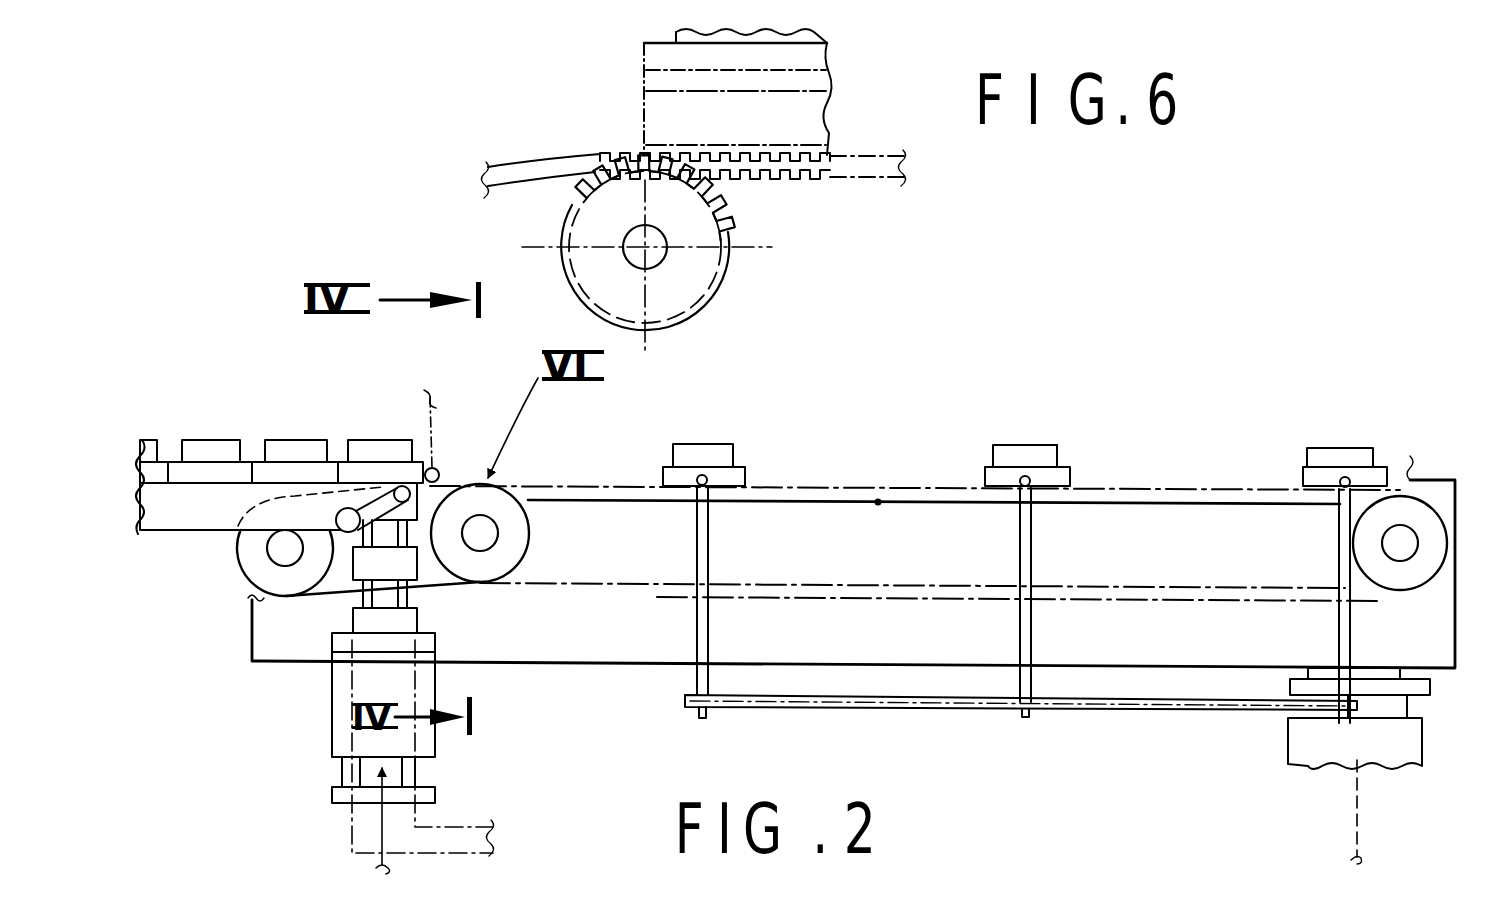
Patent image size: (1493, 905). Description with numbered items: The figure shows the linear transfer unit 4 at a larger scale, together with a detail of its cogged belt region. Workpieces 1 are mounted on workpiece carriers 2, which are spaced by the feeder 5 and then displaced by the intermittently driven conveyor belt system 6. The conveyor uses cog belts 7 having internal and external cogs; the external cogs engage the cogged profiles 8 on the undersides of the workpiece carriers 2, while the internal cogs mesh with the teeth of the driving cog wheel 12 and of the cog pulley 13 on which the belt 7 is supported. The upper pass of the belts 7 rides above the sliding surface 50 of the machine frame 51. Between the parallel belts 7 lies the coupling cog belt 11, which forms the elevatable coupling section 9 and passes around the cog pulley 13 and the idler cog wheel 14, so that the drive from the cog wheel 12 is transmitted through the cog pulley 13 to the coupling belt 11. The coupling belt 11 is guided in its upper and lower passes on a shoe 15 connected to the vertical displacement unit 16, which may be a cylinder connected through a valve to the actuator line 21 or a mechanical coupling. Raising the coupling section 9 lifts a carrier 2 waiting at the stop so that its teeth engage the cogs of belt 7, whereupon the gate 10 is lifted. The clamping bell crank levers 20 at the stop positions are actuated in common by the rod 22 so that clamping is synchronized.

In FIG. 6, the workpiece 1 is at (826, 35).
In FIG. 2, the workpiece 1 is at (287, 447).
In FIG. 6, the workpiece carrier 2 is at (812, 104).
In FIG. 2, the workpiece carrier 2 is at (198, 472).
In FIG. 2, the linear transfer unit 4 is at (1178, 477).
In FIG. 2, the feeder 5 is at (150, 540).
In FIG. 2, the conveyor belt system 6 is at (630, 590).
In FIG. 6, the cog belt 7 is at (693, 198).
In FIG. 2, the cog belt 7 is at (832, 487).
In FIG. 6, the cogged profile 8 is at (722, 113).
In FIG. 2, the coupling section 9 is at (318, 602).
In FIG. 2, the gate 10 is at (440, 470).
In FIG. 6, the coupling cog belt 11 is at (547, 178).
In FIG. 2, the coupling cog belt 11 is at (443, 588).
In FIG. 2, the driving cog wheel 12 is at (1425, 510).
In FIG. 6, the cog pulley 13 is at (690, 268).
In FIG. 2, the cog wheel 14 is at (245, 552).
In FIG. 2, the shoe 15 is at (397, 510).
In FIG. 2, the vertical displacement unit 16 is at (420, 598).
In FIG. 2, the bell crank lever 20 is at (697, 622).
In FIG. 2, the coupling 21 is at (415, 395).
In FIG. 2, the rod 22 is at (862, 704).
In FIG. 2, the sliding surface 50 is at (878, 503).
In FIG. 2, the machine frame 51 is at (1305, 532).